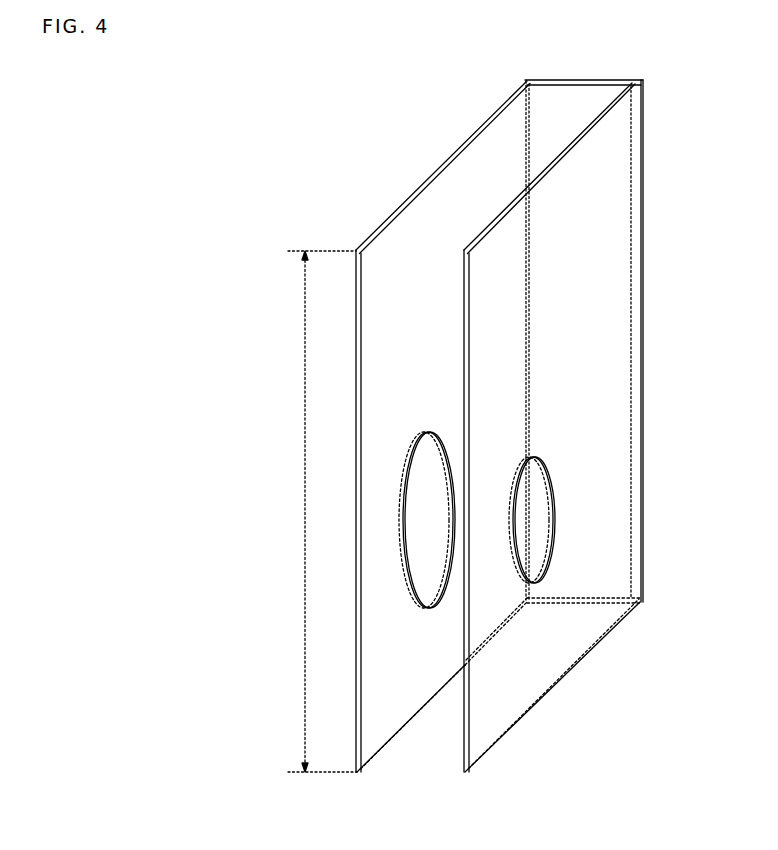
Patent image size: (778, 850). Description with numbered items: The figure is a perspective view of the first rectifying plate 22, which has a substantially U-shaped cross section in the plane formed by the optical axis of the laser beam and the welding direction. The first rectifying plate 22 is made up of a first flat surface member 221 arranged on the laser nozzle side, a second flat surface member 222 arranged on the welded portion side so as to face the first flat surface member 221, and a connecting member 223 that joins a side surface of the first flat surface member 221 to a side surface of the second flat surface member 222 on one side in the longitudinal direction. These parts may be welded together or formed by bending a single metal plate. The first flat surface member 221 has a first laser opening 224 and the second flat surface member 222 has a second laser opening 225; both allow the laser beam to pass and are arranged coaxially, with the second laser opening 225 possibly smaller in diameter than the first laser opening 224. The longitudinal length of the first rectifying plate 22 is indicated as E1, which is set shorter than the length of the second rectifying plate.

The first rectifying plate 22 is at (677, 143).
The first flat surface member 221 is at (436, 192).
The second flat surface member 222 is at (615, 290).
The connecting member 223 is at (572, 79).
The first laser opening 224 is at (430, 432).
The second laser opening 225 is at (551, 474).
The length of the first rectifying plate in the longitudinal direction E1 is at (314, 511).